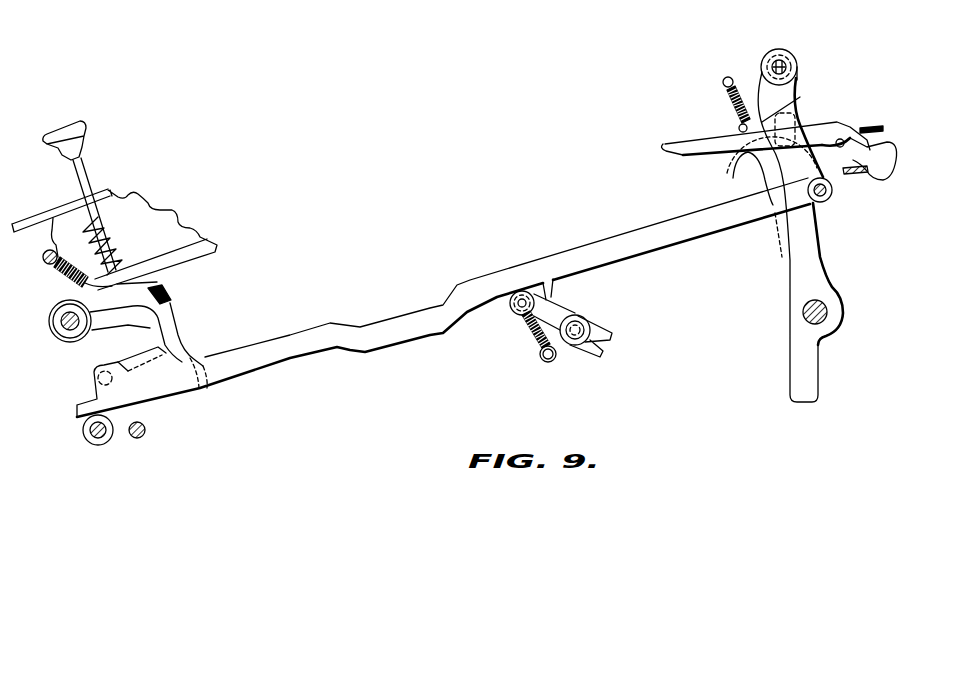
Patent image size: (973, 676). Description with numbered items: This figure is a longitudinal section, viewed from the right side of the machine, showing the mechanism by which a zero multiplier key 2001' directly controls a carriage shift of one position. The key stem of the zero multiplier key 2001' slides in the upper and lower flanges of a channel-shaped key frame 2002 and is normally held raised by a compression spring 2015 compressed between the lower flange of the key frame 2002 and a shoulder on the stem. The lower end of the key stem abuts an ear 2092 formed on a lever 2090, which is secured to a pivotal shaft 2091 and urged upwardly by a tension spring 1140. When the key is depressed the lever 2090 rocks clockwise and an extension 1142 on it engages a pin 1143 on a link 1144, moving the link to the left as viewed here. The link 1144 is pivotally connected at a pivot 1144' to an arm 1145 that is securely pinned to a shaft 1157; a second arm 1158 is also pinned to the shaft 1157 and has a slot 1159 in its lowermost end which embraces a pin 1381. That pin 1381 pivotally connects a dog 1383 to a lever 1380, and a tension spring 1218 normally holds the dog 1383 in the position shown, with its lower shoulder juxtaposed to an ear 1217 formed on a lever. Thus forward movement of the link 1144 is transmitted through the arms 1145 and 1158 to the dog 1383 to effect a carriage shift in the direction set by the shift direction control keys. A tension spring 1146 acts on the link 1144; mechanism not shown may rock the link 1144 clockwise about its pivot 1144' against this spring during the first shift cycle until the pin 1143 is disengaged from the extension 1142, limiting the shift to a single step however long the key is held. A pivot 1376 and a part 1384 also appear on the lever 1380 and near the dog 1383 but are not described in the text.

The link 1144 is at (443, 311).
The pin 1143 is at (98, 373).
The extension 1142 is at (163, 349).
The lever 2090 is at (187, 342).
The pivotal shaft 2091 is at (66, 319).
The ear 2092 is at (158, 283).
The tension spring 1140 is at (58, 278).
The compression spring 2015 is at (80, 203).
The key frame 2002 is at (123, 198).
The zero multiplier key 2001' is at (100, 197).
The tension spring 1146 is at (530, 327).
The lever 1380 is at (818, 258).
The pivot 1376 is at (820, 312).
The pivot 1144' is at (849, 202).
The shaft 1157 is at (790, 60).
The arm 1158 is at (805, 87).
The arm 1145 is at (781, 109).
The slot 1159 is at (797, 114).
The pin 1381 is at (740, 153).
The dog 1383 is at (683, 152).
The ear 1217 is at (858, 180).
The pin 1384 is at (883, 123).
The tension spring 1218 is at (728, 103).